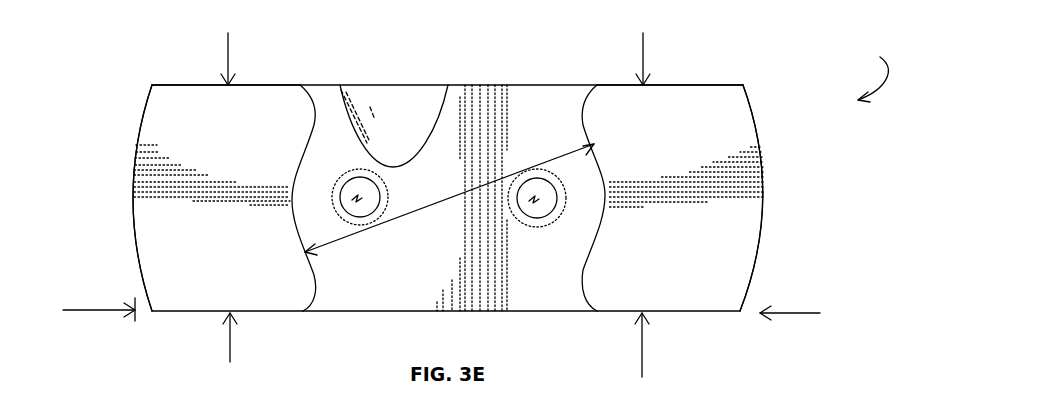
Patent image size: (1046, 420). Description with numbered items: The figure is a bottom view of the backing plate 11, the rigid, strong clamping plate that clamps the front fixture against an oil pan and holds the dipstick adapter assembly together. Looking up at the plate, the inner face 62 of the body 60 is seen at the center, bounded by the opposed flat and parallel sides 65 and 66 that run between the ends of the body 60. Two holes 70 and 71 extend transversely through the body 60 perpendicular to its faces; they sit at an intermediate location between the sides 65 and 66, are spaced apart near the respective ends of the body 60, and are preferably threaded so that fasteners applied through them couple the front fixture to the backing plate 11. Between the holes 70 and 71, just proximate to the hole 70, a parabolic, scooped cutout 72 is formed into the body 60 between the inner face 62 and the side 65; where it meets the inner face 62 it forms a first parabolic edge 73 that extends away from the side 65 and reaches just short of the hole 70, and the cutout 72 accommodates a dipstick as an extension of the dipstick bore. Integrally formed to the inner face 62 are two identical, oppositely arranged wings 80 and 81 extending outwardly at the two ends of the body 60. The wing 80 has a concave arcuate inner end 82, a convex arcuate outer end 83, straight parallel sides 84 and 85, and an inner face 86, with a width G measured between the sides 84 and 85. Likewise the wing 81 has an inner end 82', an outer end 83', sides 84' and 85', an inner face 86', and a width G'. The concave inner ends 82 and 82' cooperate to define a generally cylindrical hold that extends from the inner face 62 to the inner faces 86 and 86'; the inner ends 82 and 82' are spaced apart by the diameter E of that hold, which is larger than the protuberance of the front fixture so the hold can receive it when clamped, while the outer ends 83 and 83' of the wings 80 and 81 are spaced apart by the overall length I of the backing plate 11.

The backing plate 11 is at (871, 75).
The body 60 is at (555, 85).
The inner face 62 is at (553, 140).
The side 65 is at (338, 313).
The side 66 is at (323, 85).
The hole 70 is at (370, 180).
The hole 71 is at (548, 183).
The cutout 72 is at (393, 112).
The first parabolic edge 73 is at (352, 113).
The wing 80 is at (152, 85).
The wing 81 is at (743, 86).
The inner end 82 is at (311, 198).
The inner end 82' is at (573, 198).
The outer end 83 is at (119, 198).
The outer end 83' is at (780, 198).
The side 84 is at (227, 335).
The side 84' is at (668, 338).
The side 85 is at (226, 64).
The side 85' is at (670, 64).
The inner face 86 is at (212, 212).
The inner face 86' is at (685, 216).
The width G is at (238, 42).
The width G' is at (662, 44).
The diameter E is at (355, 238).
The length I is at (806, 312).